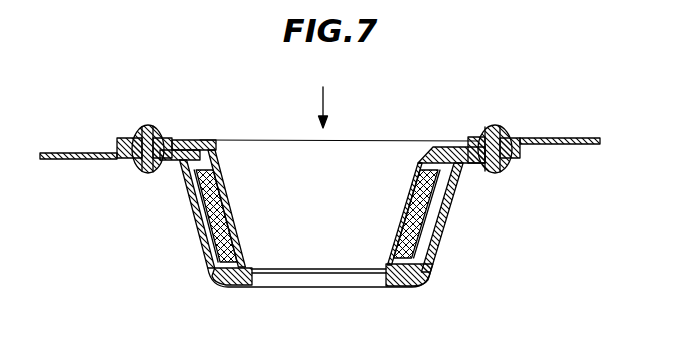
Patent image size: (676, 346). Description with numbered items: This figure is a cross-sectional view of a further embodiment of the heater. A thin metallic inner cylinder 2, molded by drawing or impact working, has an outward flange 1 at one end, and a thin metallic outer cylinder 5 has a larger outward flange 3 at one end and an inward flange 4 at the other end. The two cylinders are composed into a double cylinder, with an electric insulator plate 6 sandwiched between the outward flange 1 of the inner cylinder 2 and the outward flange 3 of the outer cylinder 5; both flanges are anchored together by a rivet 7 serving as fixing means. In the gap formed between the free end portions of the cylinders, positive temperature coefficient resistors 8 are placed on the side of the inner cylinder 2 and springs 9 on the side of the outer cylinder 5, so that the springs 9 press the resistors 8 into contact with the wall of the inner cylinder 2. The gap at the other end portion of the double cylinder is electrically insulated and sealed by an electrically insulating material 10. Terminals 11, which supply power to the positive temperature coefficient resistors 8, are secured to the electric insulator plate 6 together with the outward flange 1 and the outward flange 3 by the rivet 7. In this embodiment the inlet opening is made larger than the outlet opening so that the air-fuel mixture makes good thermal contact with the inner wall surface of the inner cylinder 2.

The outward flange 1 is at (450, 146).
The inner cylinder 2 is at (216, 186).
The outward flange 3 is at (168, 175).
The inward flange 4 is at (242, 290).
The outer cylinder 5 is at (193, 203).
The electric insulator plate 6 is at (170, 136).
The rivet 7 is at (147, 124).
The positive temperature coefficient resistors 8 is at (212, 196).
The springs 9 is at (205, 220).
The electrically insulating material 10 is at (432, 274).
The terminals 11 is at (78, 152).